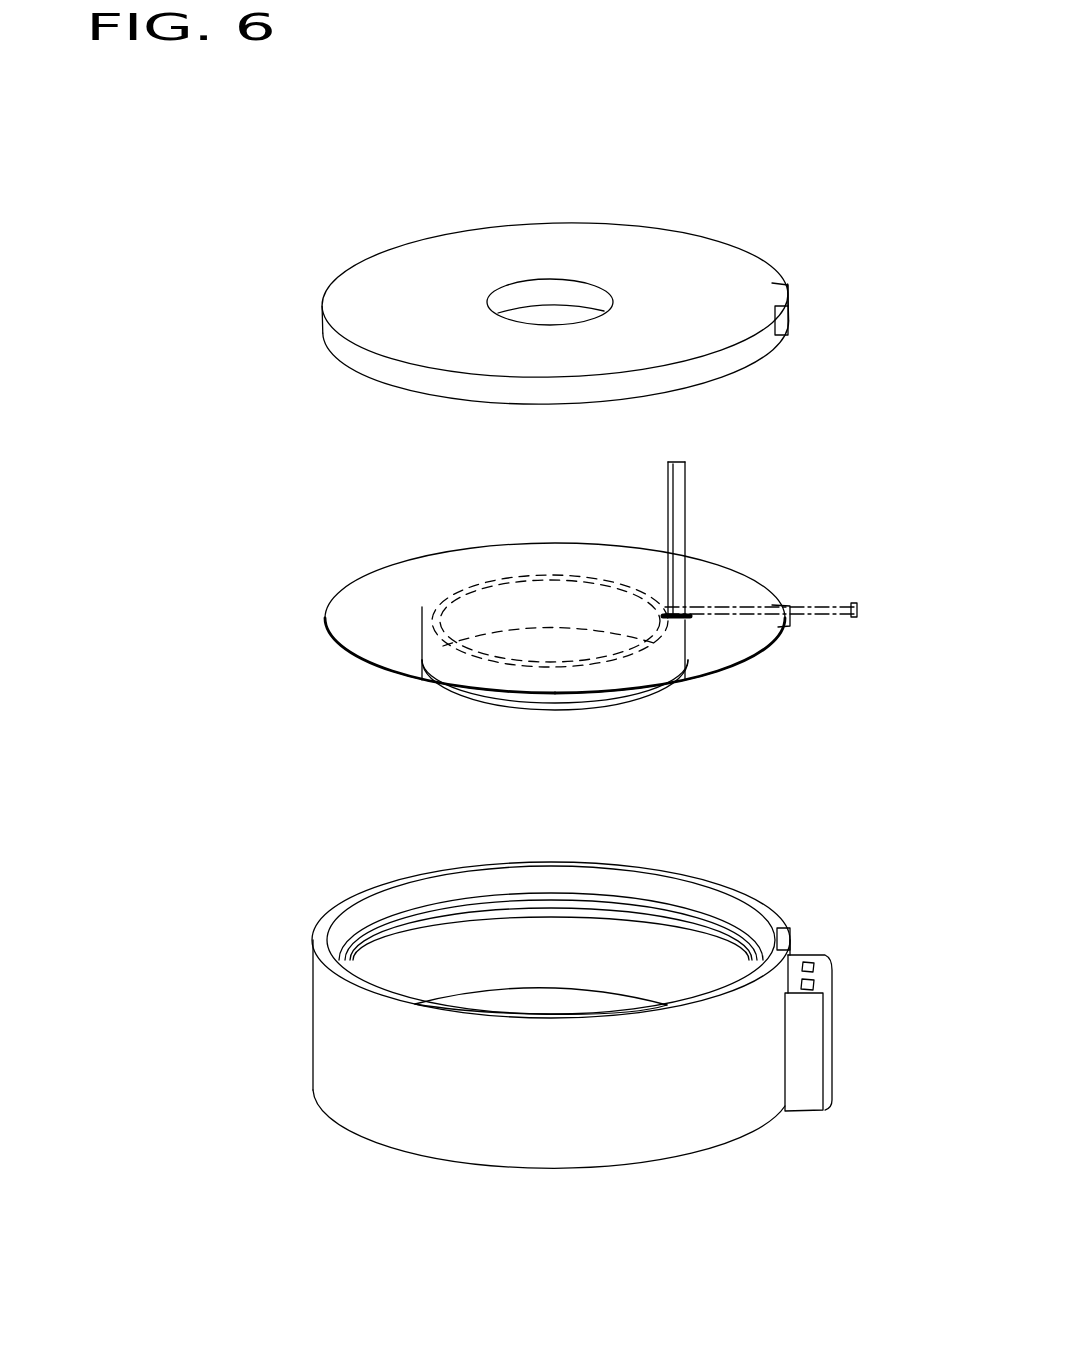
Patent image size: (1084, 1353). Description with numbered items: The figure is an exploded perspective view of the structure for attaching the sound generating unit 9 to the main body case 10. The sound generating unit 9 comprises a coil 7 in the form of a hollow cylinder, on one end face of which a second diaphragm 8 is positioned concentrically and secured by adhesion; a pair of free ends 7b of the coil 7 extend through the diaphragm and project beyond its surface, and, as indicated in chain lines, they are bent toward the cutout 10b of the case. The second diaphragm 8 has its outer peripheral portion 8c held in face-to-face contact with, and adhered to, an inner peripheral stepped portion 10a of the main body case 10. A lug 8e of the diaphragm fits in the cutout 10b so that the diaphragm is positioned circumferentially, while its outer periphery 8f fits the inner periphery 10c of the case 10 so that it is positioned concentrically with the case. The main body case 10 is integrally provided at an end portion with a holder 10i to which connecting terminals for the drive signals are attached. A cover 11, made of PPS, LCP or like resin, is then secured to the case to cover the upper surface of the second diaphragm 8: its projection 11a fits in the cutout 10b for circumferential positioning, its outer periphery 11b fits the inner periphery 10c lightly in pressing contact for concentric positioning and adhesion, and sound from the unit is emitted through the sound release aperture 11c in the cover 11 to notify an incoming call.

The coil 7 is at (567, 708).
The free ends of the coil 7b is at (682, 483).
The second diaphragm 8 is at (540, 560).
The outer peripheral portion 8c is at (345, 637).
The lug 8e is at (782, 628).
The outer periphery 8f is at (743, 662).
The sound generating unit 9 is at (322, 580).
The main body case 10 is at (590, 1115).
The inner peripheral stepped portion 10a is at (346, 947).
The cutout 10b is at (790, 940).
The inner periphery 10c is at (374, 910).
The holder 10i is at (815, 1033).
The cover 11 is at (688, 273).
The projection 11a is at (788, 290).
The outer periphery 11b is at (477, 383).
The sound release aperture 11c is at (545, 291).